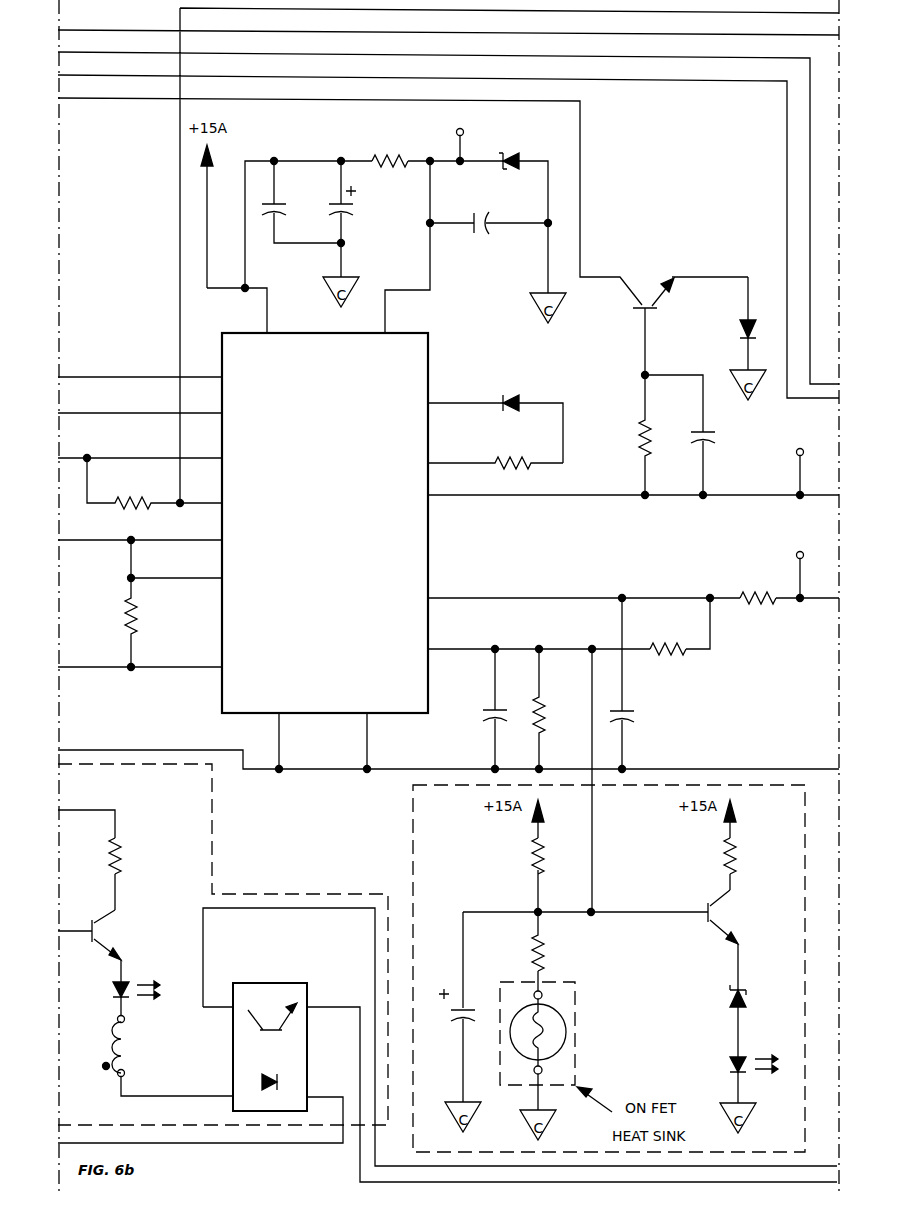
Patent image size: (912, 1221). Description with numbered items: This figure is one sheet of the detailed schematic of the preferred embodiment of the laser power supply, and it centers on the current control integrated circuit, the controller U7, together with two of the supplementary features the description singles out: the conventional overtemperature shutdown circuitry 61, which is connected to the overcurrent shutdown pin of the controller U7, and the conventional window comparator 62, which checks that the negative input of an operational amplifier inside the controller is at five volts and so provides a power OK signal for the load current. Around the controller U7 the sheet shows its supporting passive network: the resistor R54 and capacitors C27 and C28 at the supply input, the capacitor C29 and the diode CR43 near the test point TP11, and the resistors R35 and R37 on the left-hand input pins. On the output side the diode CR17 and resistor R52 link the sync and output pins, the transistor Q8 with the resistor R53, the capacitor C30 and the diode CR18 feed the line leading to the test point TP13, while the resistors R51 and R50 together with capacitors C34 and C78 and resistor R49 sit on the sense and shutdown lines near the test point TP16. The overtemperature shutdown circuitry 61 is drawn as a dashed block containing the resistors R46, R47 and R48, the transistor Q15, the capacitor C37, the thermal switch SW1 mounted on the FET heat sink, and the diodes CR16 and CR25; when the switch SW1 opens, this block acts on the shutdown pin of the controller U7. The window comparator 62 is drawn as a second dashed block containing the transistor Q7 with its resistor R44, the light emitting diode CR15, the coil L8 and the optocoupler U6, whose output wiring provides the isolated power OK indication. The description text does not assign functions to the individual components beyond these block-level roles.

The overtemperature shutdown circuitry 61 is at (413, 838).
The window comparator 62 is at (318, 893).
The UC1846 PWM controller U7 is at (331, 527).
The 4N35T optocoupler U6 is at (269, 1027).
The transistor Q7 is at (115, 946).
The transistor Q8 is at (690, 312).
The transistor Q15 is at (736, 917).
The thermal switch SW1 is at (560, 1033).
The inductor L8 is at (168, 1054).
The resistor R35 is at (154, 483).
The resistor R37 is at (149, 603).
The resistor R44 is at (133, 856).
The resistor R46 is at (556, 856).
The resistor R47 is at (556, 941).
The resistor R48 is at (748, 856).
The resistor R49 is at (556, 709).
The resistor R50 is at (668, 637).
The resistor R51 is at (758, 587).
The resistor R52 is at (495, 453).
The resistor R53 is at (625, 435).
The resistor R54 is at (390, 150).
The capacitor C27 is at (301, 202).
The capacitor C28 is at (356, 219).
The capacitor C29 is at (489, 211).
The capacitor C30 is at (696, 435).
The capacitor C34 is at (479, 709).
The capacitor C37 is at (446, 1045).
The capacitor C78 is at (638, 683).
The light emitting diode CR15 is at (144, 990).
The zener diode CR16 is at (708, 998).
The diode CR17 is at (495, 416).
The diode CR18 is at (725, 323).
The light emitting diode CR25 is at (758, 1054).
The diode CR43 is at (504, 145).
The test point TP11 is at (463, 134).
The test point TP13 is at (801, 461).
The test point TP16 is at (801, 564).